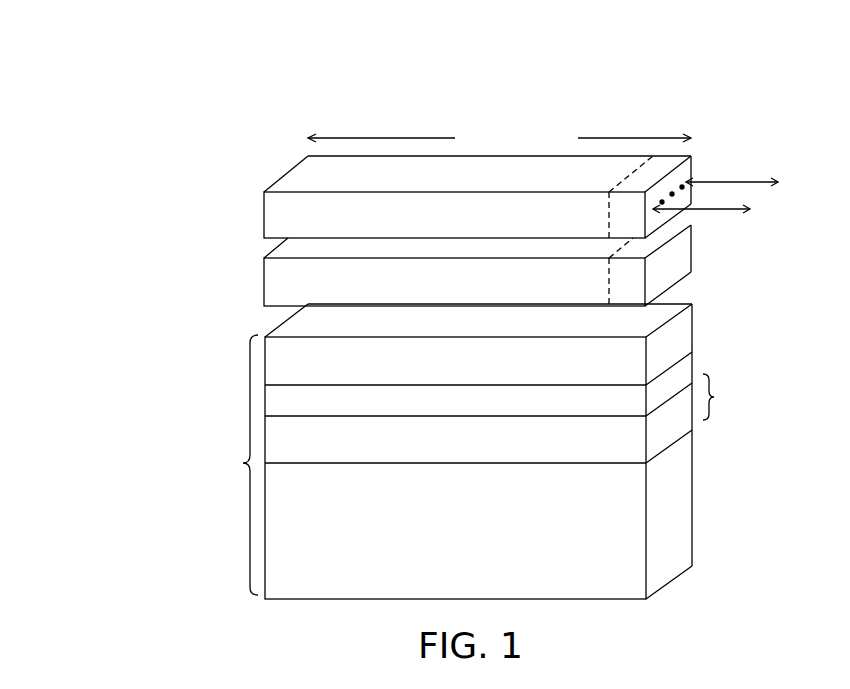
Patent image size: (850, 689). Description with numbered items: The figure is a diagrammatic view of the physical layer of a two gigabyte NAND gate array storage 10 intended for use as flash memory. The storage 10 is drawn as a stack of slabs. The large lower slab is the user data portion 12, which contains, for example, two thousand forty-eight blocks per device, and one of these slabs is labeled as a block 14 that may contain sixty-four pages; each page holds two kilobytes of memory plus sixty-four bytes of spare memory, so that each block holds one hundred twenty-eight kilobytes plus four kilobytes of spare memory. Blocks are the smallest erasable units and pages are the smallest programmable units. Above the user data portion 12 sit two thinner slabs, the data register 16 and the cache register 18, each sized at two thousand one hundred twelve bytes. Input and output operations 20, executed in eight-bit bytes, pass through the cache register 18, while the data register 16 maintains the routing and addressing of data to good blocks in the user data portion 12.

The NAND gate array storage 10 is at (289, 76).
The user data portion 12 is at (226, 346).
The block 14 is at (683, 430).
The data register 16 is at (264, 283).
The cache register 18 is at (264, 214).
The input and output operations 20 is at (764, 138).